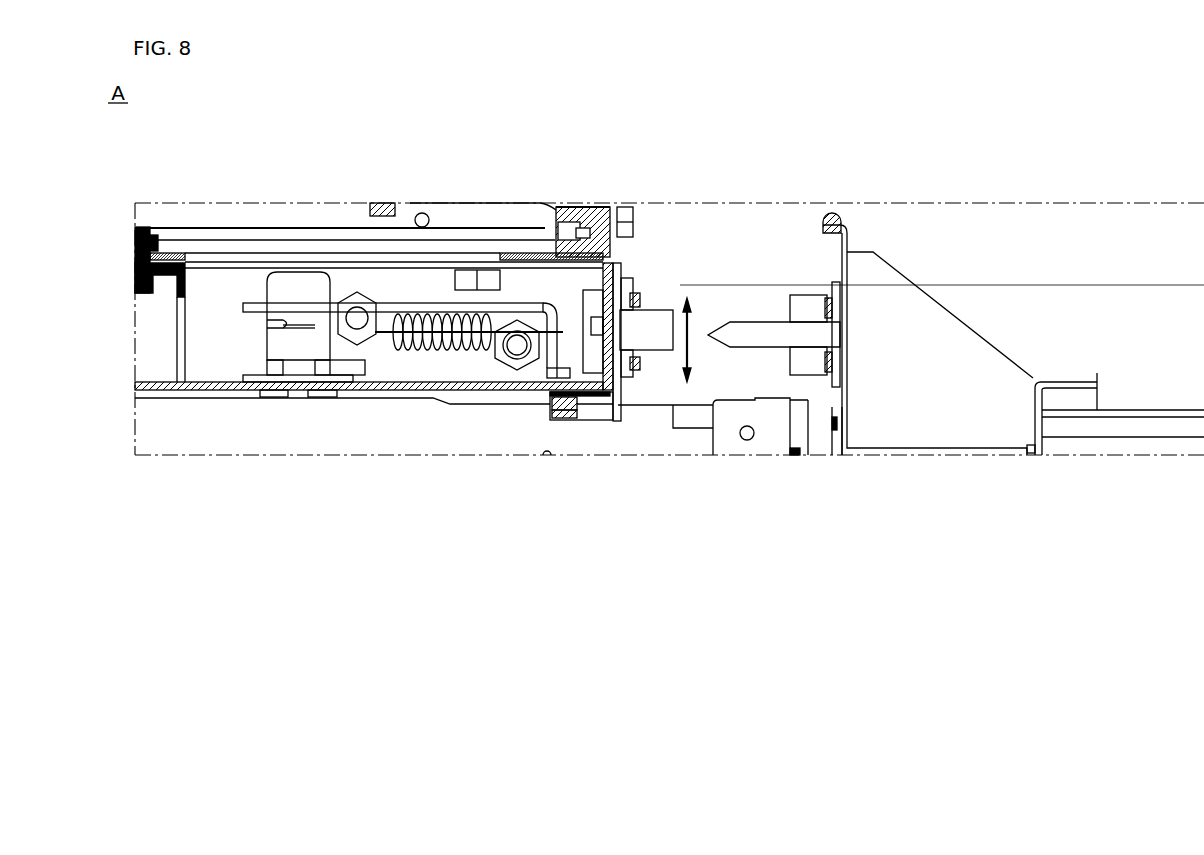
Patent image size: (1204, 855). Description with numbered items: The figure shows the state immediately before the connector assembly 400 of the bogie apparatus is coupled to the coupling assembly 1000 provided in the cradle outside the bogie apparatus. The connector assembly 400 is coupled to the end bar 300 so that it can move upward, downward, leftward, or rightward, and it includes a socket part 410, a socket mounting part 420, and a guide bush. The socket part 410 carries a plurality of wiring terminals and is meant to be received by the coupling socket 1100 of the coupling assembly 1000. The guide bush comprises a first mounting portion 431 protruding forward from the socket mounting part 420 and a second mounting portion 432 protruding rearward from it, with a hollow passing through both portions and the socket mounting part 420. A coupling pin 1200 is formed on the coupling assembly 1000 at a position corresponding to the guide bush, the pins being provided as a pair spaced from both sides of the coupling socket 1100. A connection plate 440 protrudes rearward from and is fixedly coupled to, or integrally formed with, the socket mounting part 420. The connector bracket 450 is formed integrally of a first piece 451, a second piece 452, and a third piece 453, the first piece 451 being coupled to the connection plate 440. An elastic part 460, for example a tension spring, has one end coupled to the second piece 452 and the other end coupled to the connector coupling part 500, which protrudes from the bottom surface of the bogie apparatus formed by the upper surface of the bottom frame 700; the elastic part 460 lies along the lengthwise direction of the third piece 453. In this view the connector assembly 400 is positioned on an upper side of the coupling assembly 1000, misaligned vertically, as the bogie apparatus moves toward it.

The end bar 300 is at (618, 338).
The connector assembly 400 is at (416, 205).
The socket part 410 is at (587, 297).
The socket mounting part 420 is at (618, 407).
The first mounting portion 431 is at (657, 320).
The second mounting portion 432 is at (585, 245).
The connection plate 440 is at (588, 405).
The connector bracket 450 is at (530, 540).
The first piece 451 is at (556, 382).
The second piece 452 is at (548, 352).
The third piece 453 is at (385, 309).
The elastic part 460 is at (470, 312).
The connector coupling part 500 is at (281, 283).
The bottom frame 700 is at (241, 390).
The coupling assembly 1000 is at (925, 243).
The coupling socket 1100 is at (805, 300).
The coupling pin 1200 is at (762, 328).